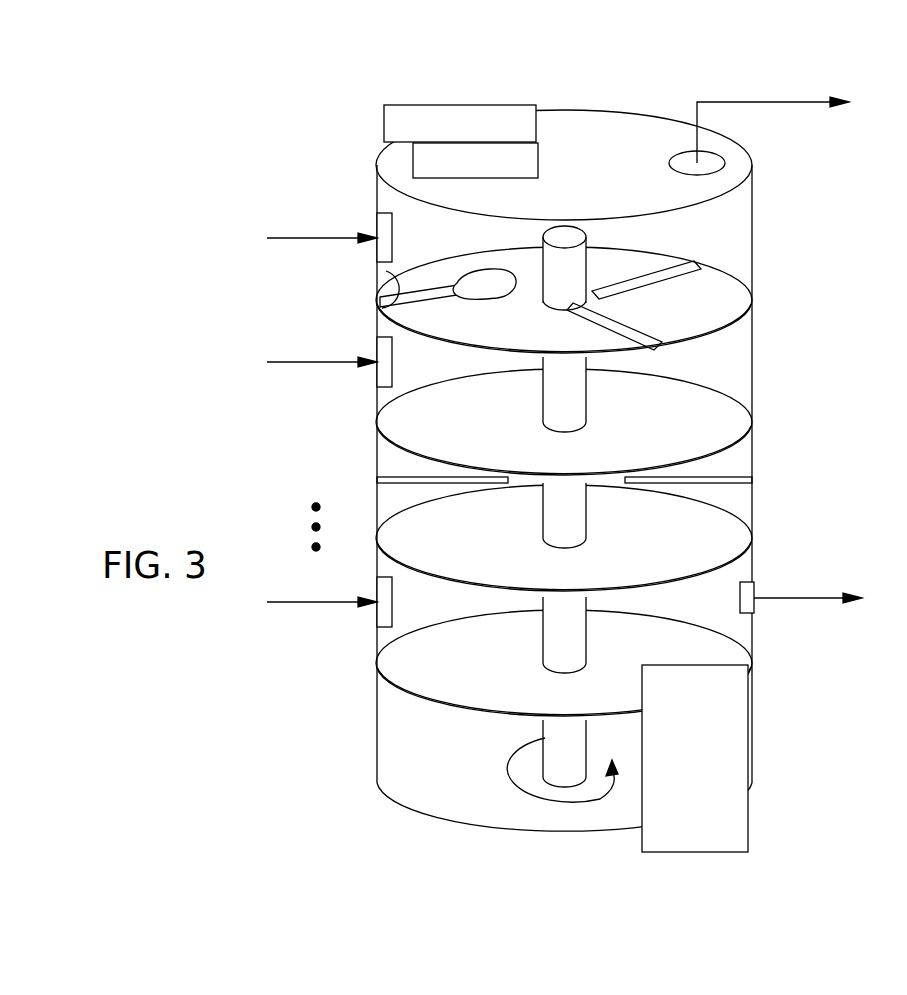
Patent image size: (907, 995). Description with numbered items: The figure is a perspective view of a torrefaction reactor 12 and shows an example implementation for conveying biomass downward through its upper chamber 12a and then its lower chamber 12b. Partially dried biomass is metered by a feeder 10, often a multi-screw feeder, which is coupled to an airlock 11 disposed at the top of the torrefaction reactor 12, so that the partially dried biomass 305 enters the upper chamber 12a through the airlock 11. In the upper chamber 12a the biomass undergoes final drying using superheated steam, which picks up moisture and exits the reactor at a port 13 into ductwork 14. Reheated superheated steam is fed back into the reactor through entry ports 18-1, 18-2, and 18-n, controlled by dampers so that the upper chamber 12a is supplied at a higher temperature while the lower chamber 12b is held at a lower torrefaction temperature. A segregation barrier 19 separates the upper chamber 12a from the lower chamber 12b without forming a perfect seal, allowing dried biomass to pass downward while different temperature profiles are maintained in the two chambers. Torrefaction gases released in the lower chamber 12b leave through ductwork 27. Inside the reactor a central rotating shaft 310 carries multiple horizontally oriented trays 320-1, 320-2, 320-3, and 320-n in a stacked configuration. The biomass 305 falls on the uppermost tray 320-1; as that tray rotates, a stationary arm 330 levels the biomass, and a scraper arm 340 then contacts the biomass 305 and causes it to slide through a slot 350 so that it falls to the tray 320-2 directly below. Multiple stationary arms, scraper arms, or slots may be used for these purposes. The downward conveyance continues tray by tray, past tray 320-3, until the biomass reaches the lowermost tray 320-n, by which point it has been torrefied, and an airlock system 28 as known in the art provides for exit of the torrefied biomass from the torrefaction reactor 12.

The feeder 10 is at (433, 105).
The airlock 11 is at (538, 156).
The torrefaction reactor 12 is at (570, 506).
The upper chamber 12a is at (730, 360).
The lower chamber 12b is at (735, 578).
The port 13 is at (712, 153).
The ductwork 14 is at (730, 102).
The entry port 18-1 is at (377, 226).
The entry port 18-2 is at (377, 372).
The entry port 18-n is at (377, 606).
The segregation barrier 19 is at (735, 478).
The ductwork 27 is at (785, 598).
The airlock system 28 is at (748, 808).
The partially dried biomass 305 is at (512, 290).
The central rotating shaft 310 is at (525, 766).
The uppermost tray 320-1 is at (388, 318).
The tray 320-2 is at (392, 450).
The third tray 320-3 is at (564, 538).
The lowermost tray 320-n is at (403, 692).
The stationary arm 330 is at (377, 275).
The scraper arm 340 is at (636, 335).
The slot 350 is at (650, 278).